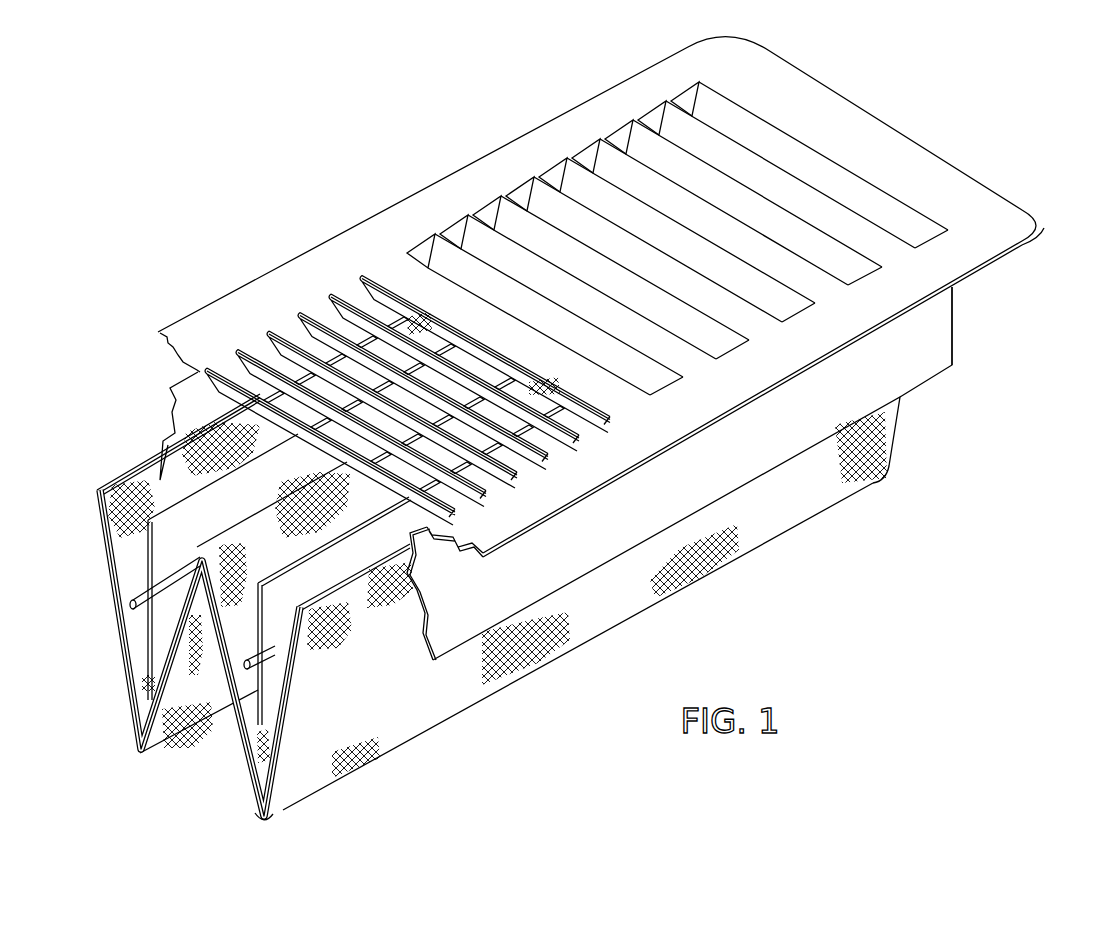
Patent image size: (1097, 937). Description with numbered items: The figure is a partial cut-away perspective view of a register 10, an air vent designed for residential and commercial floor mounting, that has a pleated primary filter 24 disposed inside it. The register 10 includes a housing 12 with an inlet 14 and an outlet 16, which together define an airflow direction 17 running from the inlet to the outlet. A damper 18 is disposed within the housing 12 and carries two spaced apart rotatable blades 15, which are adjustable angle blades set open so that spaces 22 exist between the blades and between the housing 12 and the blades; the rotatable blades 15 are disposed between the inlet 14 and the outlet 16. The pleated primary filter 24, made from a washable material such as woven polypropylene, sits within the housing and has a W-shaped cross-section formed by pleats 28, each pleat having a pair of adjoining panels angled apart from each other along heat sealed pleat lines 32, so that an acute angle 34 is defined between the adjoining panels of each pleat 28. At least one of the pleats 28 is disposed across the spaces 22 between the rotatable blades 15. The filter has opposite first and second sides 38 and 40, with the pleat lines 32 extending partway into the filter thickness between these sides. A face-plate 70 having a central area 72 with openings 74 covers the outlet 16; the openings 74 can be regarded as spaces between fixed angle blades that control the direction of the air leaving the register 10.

The register 10 is at (966, 336).
The housing 12 is at (950, 313).
The inlet 14 is at (587, 575).
The rotatable blades 15 is at (121, 570).
The outlet 16 is at (172, 384).
The airflow direction 17 is at (107, 750).
The damper 18 is at (187, 518).
The spaces 22 is at (197, 388).
The pleated primary filter 24 is at (318, 788).
The pleats 28 is at (117, 512).
The pleat lines 32 is at (285, 825).
The acute angle 34 is at (307, 817).
The first side 38 is at (403, 688).
The second side 40 is at (121, 480).
The face-plate 70 is at (511, 152).
The central area 72 is at (697, 218).
The openings 74 is at (372, 292).